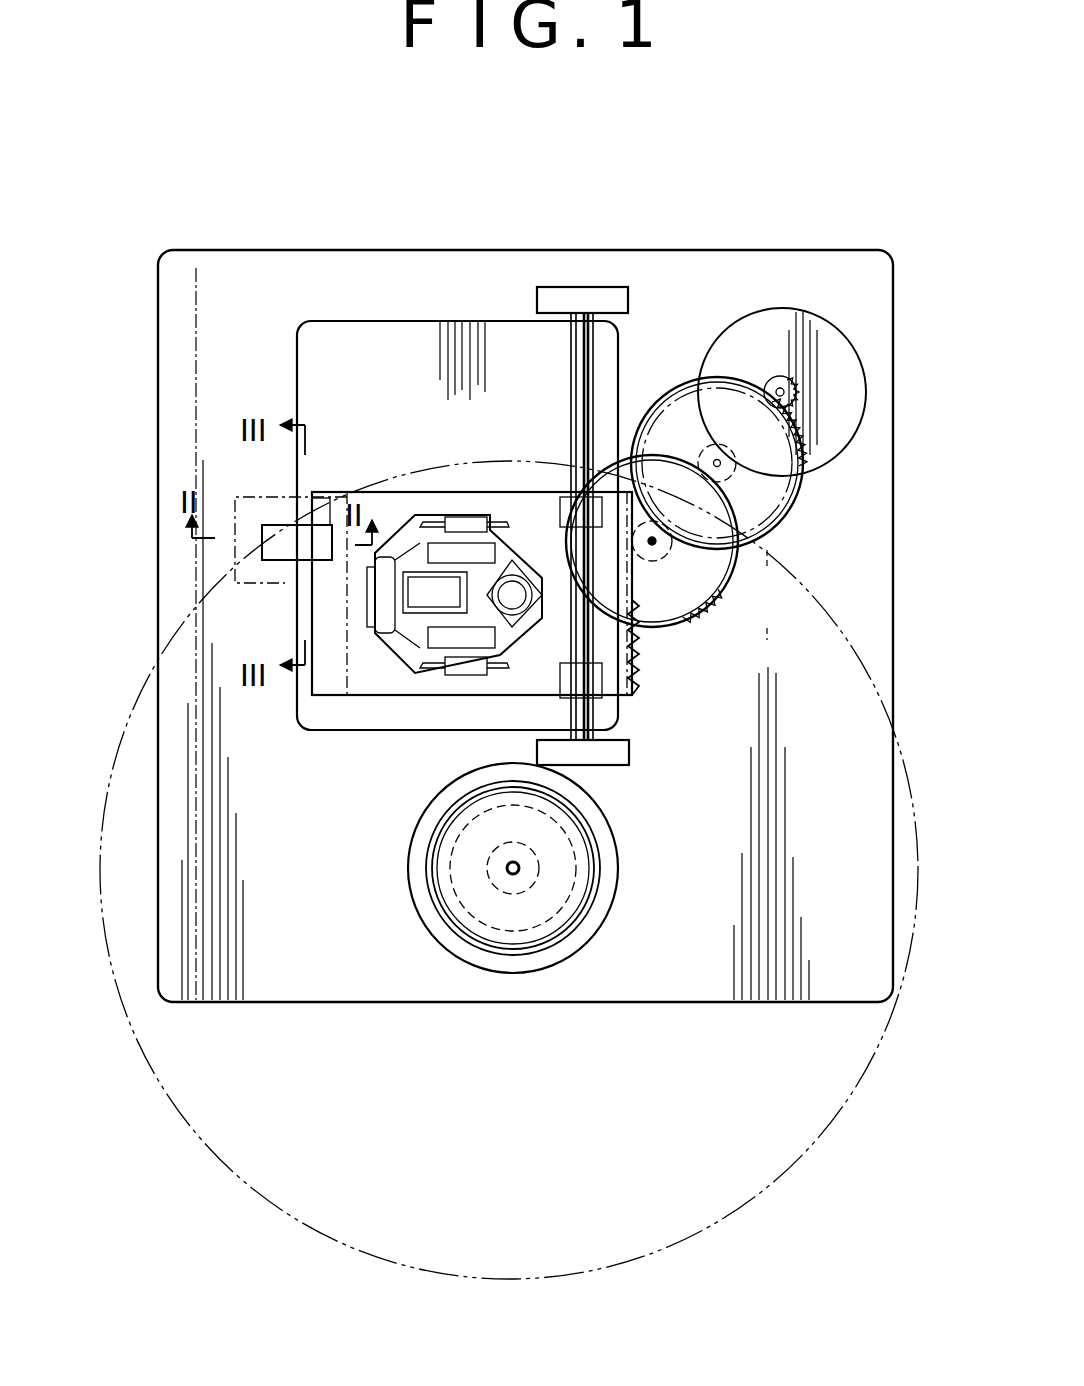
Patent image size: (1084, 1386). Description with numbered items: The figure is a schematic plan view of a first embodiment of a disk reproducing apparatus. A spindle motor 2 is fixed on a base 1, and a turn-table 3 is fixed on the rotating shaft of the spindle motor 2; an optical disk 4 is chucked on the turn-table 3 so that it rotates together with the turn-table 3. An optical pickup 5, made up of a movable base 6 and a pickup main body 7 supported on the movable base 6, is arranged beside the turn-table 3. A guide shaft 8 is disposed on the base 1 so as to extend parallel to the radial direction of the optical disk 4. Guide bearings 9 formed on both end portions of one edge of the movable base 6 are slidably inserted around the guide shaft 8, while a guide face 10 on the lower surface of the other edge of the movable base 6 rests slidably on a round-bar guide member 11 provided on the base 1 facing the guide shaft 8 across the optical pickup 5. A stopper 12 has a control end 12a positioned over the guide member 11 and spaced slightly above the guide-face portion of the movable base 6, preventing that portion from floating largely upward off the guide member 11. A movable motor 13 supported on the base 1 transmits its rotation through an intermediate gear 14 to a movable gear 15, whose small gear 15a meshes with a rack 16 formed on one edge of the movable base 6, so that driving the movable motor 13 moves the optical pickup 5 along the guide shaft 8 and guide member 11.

The base 1 is at (262, 250).
The spindle motor 2 is at (580, 878).
The turn-table 3 is at (425, 908).
The optical disk 4 is at (736, 1211).
The optical pickup 5 is at (398, 497).
The movable base 6 is at (330, 688).
The pickup main body 7 is at (462, 517).
The guide shaft 8 is at (593, 352).
The guide bearings 9 is at (560, 517).
The guide face 10 is at (315, 612).
The guide member 11 is at (278, 523).
The stopper 12 is at (245, 505).
The control end 12a is at (327, 497).
The movable motor 13 is at (845, 352).
The intermediate gear 14 is at (785, 515).
The movable gear 15 is at (717, 598).
The small gear 15a is at (734, 578).
The rack 16 is at (643, 652).